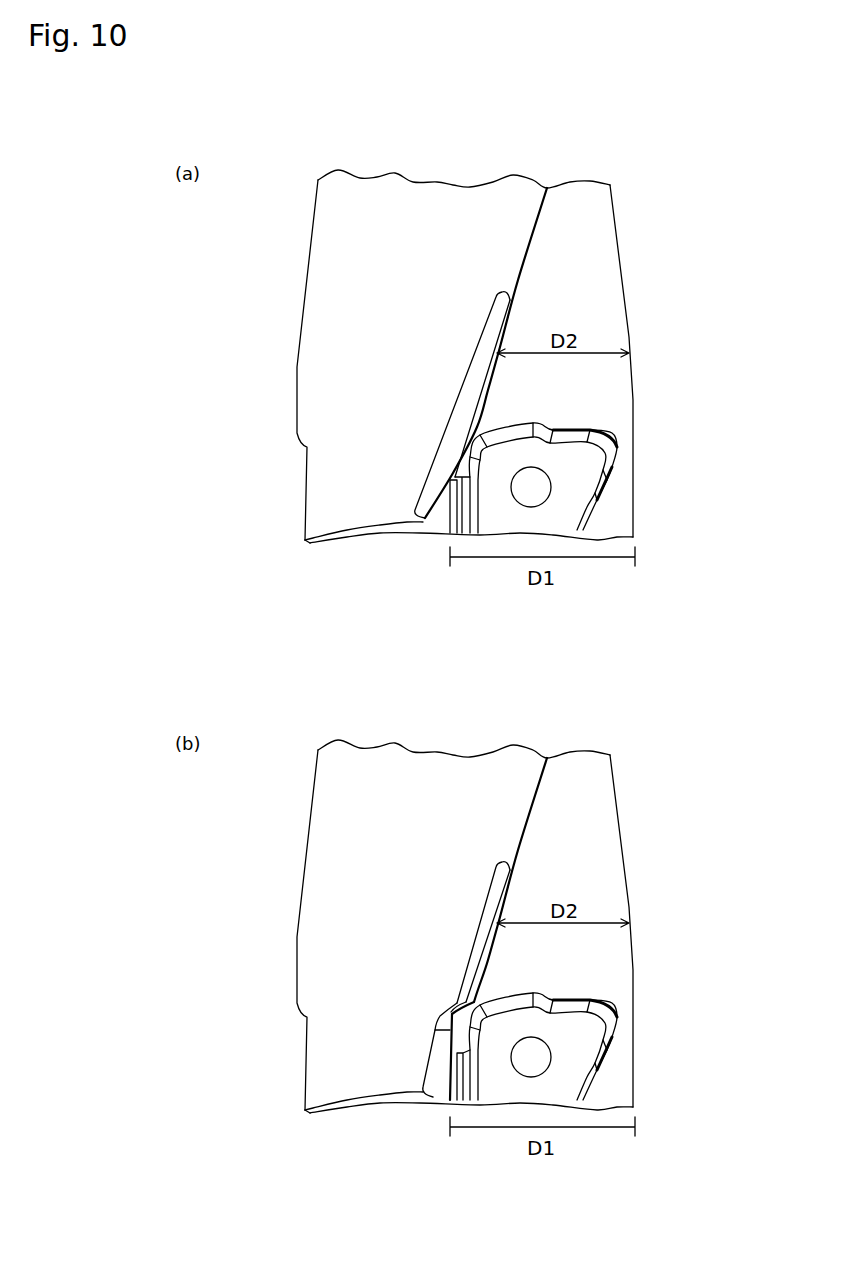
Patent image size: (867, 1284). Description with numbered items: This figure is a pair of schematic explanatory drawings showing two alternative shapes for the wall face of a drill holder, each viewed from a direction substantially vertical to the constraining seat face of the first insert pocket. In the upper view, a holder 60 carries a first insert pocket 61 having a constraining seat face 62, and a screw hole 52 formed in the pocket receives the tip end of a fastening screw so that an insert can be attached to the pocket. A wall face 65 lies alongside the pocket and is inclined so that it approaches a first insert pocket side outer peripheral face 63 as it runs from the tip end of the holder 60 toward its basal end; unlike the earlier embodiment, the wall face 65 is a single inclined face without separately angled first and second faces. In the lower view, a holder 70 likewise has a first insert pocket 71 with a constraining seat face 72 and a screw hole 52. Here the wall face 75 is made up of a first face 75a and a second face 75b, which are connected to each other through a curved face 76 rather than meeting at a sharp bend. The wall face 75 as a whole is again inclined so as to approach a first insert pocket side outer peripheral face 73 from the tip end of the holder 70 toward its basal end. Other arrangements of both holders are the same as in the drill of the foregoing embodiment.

The holder 60 is at (627, 242).
The first insert pocket side outer peripheral face 63 is at (630, 335).
The wall face 65 is at (447, 422).
The first insert pocket 61 is at (594, 478).
The constraining seat face 62 is at (567, 470).
The screw hole 52 is at (538, 508).
The holder 70 is at (627, 812).
The first insert pocket side outer peripheral face 73 is at (630, 905).
The wall face 75 is at (428, 981).
The first face 75a is at (409, 1057).
The second face 75b is at (448, 1001).
The curved face 76 is at (447, 1018).
The first insert pocket 71 is at (598, 1046).
The constraining seat face 72 is at (567, 1040).